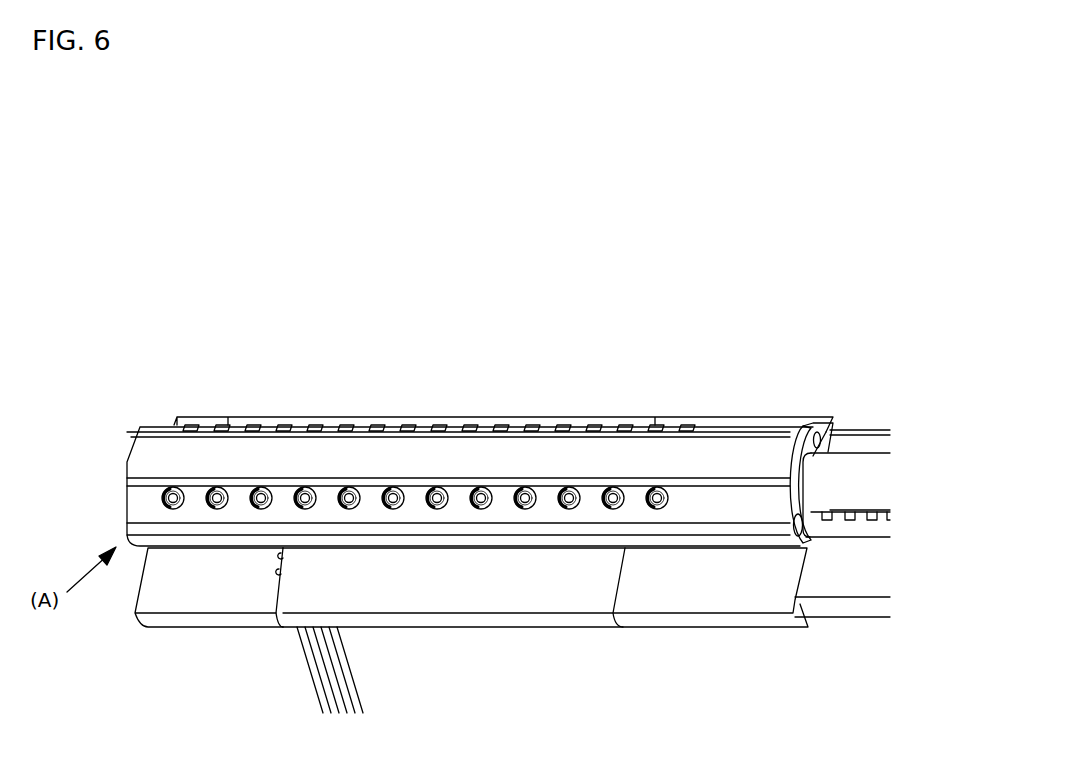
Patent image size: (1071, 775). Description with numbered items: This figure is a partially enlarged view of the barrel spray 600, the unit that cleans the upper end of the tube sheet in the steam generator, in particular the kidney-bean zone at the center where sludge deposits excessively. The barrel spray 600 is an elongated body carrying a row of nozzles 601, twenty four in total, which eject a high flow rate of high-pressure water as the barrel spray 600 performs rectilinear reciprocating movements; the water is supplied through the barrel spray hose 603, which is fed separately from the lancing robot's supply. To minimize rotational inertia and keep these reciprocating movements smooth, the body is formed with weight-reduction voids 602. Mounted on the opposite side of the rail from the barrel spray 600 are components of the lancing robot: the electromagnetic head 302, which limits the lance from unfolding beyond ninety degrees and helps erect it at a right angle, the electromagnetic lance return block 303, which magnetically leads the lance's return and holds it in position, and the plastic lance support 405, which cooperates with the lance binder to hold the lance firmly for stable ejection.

The barrel spray 600 is at (150, 452).
The nozzles 601 is at (395, 510).
The weight-reduction voids 602 is at (791, 512).
The barrel spray hose 603 is at (850, 464).
The electromagnetic head 302 is at (172, 590).
The electromagnetic lance return block 303 is at (684, 590).
The lance support 405 is at (333, 637).